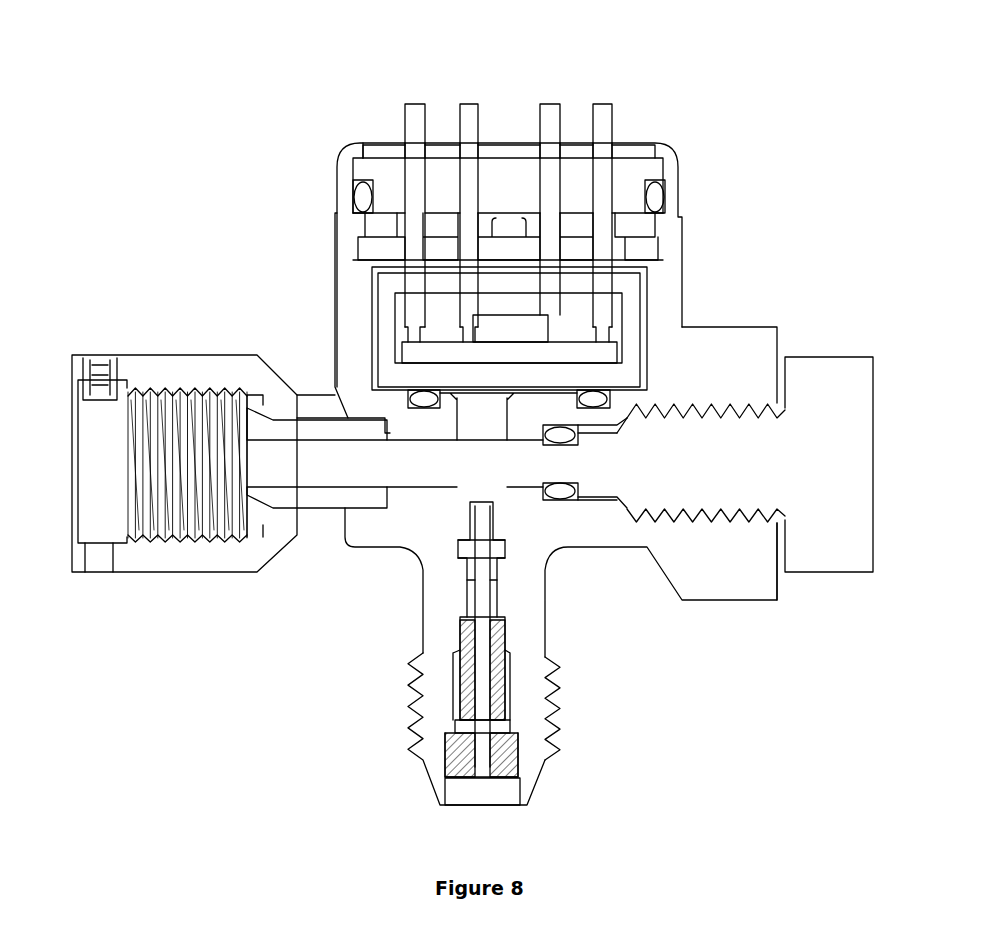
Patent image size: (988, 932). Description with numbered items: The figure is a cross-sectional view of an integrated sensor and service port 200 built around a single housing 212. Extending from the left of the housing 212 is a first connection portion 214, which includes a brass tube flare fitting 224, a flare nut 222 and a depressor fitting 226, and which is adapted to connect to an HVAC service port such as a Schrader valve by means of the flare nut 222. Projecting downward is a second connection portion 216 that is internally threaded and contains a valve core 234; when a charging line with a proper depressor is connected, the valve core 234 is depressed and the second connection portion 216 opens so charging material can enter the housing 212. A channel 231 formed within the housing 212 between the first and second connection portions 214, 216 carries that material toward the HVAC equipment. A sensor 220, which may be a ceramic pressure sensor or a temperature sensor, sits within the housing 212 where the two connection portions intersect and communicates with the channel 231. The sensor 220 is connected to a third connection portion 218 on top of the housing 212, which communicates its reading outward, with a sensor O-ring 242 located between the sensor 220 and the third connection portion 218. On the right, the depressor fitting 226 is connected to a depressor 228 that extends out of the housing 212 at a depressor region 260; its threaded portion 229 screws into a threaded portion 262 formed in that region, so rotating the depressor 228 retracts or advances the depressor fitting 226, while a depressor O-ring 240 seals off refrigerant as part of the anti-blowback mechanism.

The integrated sensor and service port 200 is at (90, 97).
The housing 212 is at (400, 548).
The first connection portion 214 is at (46, 357).
The second connection portion 216 is at (522, 815).
The third connection portion 218 is at (640, 143).
The sensor 220 is at (647, 327).
The flare nut 222 is at (215, 355).
The brass tube flare fitting 224 is at (327, 510).
The depressor fitting 226 is at (287, 468).
The depressor 228 is at (817, 357).
The threaded portion 229 is at (747, 410).
The channel 231 is at (465, 518).
The valve core 234 is at (483, 693).
The depressor O-ring 240 is at (563, 490).
The sensor O-ring 242 is at (400, 398).
The depressor region 260 is at (775, 323).
The threaded portion 262 is at (732, 512).